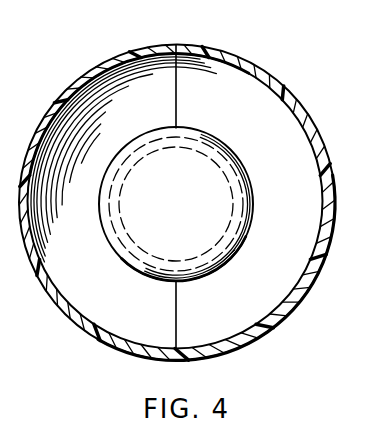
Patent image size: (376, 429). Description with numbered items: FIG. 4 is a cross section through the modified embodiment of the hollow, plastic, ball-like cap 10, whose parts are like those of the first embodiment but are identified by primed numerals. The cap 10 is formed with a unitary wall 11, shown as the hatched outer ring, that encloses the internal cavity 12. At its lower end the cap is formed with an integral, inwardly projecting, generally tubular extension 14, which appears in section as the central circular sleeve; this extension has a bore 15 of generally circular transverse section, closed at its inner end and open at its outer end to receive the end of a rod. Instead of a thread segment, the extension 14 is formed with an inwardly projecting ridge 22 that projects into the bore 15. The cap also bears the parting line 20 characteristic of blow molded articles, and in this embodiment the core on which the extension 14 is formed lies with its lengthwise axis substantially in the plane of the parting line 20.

The cap 10 is at (278, 74).
The wall 11 is at (304, 111).
The internal cavity 12 is at (281, 152).
The tubular extension 14 is at (223, 148).
The bore 15 is at (206, 194).
The parting line 20 is at (176, 103).
The ridge 22 is at (222, 251).